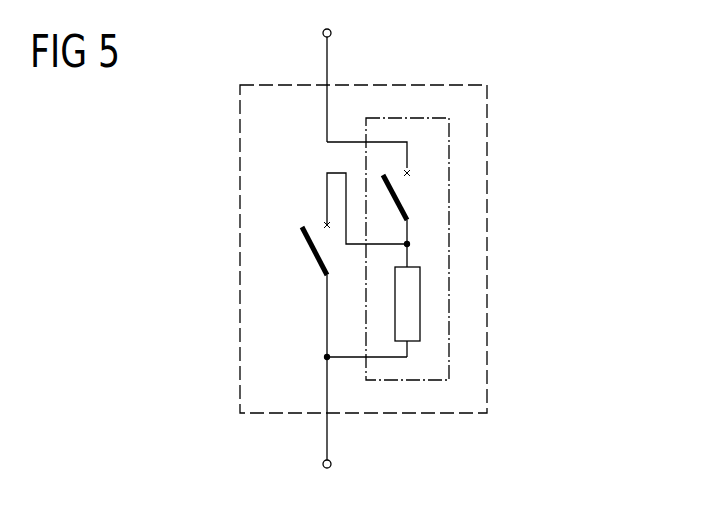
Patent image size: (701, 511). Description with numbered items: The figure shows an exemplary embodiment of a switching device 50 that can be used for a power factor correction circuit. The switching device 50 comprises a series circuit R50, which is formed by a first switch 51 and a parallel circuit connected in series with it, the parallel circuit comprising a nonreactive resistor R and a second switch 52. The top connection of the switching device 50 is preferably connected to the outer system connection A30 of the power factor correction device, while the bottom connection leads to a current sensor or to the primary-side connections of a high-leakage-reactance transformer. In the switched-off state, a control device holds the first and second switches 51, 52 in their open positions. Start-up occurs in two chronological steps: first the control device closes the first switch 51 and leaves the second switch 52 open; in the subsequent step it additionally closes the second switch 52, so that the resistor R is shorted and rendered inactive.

The outer system connection A30 is at (331, 32).
The switching device 50 is at (240, 250).
The series circuit R50 is at (449, 249).
The first switch 51 is at (394, 196).
The second switch 52 is at (312, 247).
The nonreactive resistor R is at (420, 302).